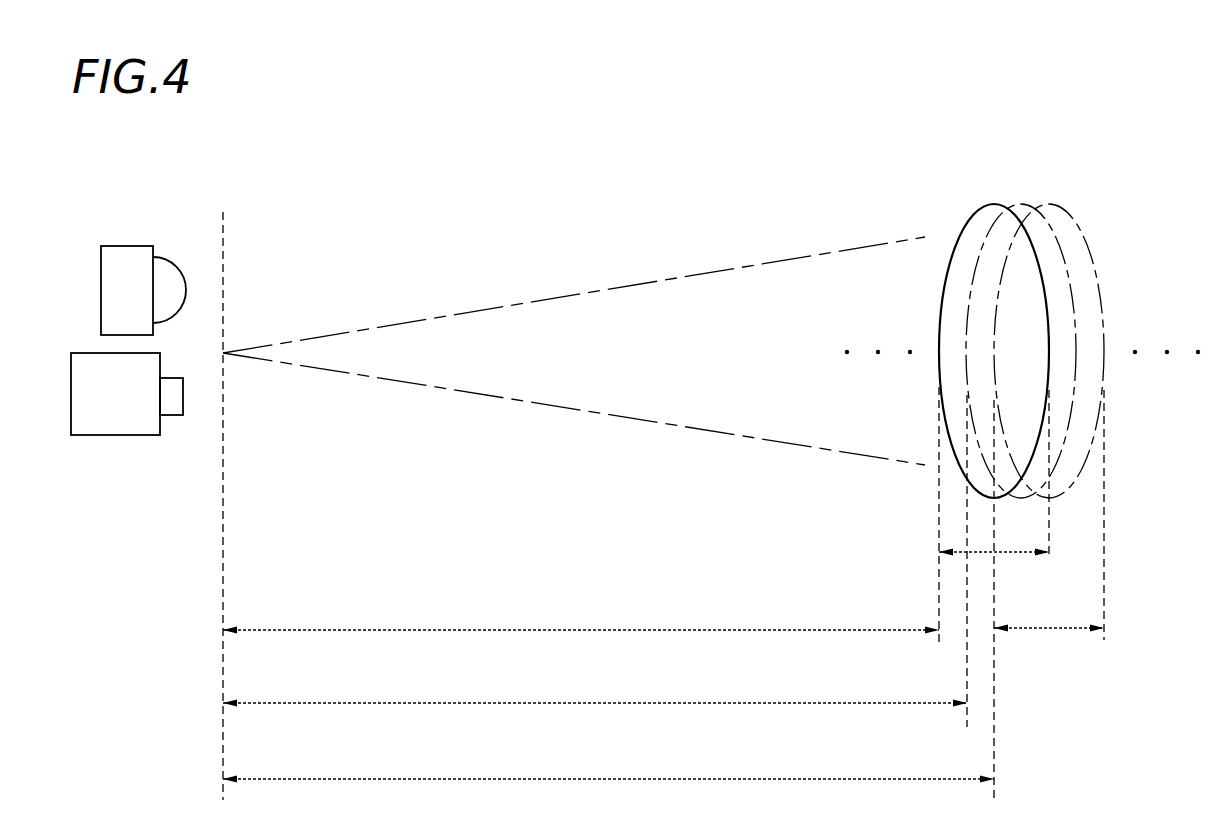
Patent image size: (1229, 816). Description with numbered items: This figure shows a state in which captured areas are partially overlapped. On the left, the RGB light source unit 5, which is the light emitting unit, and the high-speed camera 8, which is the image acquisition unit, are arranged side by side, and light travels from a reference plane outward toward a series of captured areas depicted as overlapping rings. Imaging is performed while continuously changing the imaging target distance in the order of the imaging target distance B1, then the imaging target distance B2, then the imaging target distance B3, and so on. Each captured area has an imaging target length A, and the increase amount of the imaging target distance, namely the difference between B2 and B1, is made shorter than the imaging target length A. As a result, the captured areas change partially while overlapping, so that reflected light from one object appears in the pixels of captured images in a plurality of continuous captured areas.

The RGB light source unit 5 is at (124, 247).
The high-speed camera 8 is at (100, 436).
The imaging target length A is at (1021, 578).
The imaging target distance B1 is at (581, 617).
The imaging target distance B2 is at (595, 691).
The imaging target distance B3 is at (608, 767).